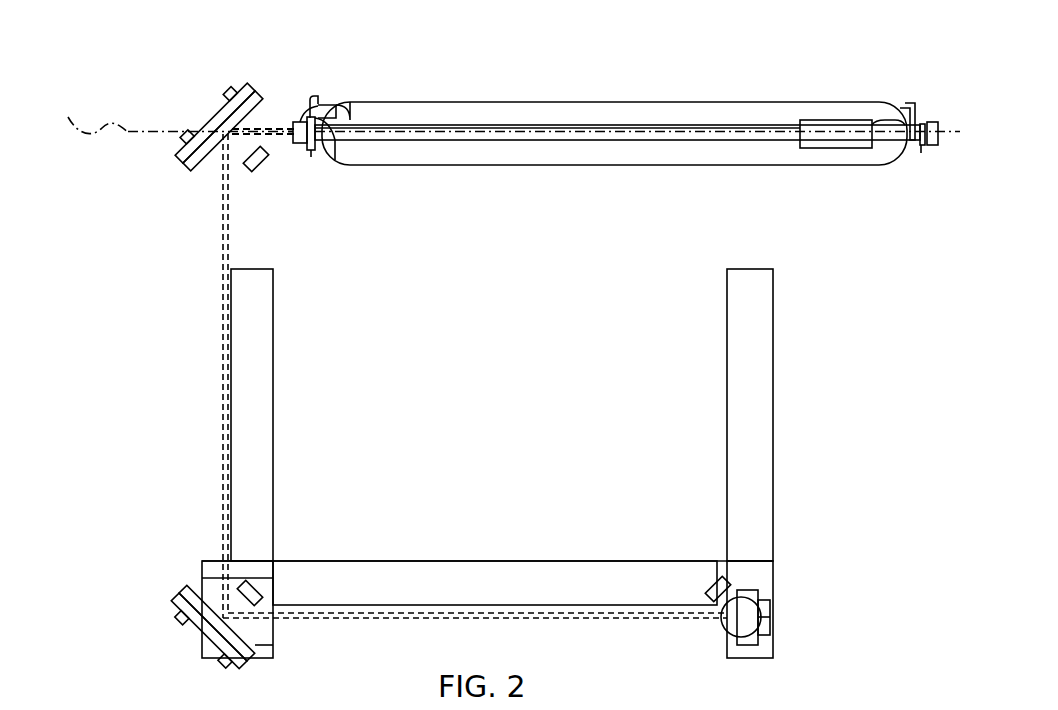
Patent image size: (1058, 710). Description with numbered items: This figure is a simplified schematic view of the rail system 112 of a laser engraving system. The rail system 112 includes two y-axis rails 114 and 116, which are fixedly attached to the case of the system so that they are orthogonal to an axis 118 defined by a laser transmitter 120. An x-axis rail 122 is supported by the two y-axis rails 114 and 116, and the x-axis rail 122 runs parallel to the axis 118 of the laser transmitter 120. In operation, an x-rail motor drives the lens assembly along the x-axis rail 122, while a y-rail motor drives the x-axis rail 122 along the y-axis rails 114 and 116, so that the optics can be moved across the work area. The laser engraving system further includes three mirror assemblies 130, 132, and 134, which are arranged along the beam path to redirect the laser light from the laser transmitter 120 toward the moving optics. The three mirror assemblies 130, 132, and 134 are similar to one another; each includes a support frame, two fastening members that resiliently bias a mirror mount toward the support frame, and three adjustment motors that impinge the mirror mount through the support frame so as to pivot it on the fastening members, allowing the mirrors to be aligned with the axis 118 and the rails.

The rail system 112 is at (122, 270).
The y-axis rail 114 is at (273, 371).
The y-axis rail 116 is at (768, 342).
The axis 118 is at (502, 112).
The laser transmitter 120 is at (596, 101).
The x-axis rail 122 is at (343, 560).
The mirror assembly 130 is at (181, 103).
The mirror assembly 132 is at (192, 645).
The mirror assembly 134 is at (789, 629).